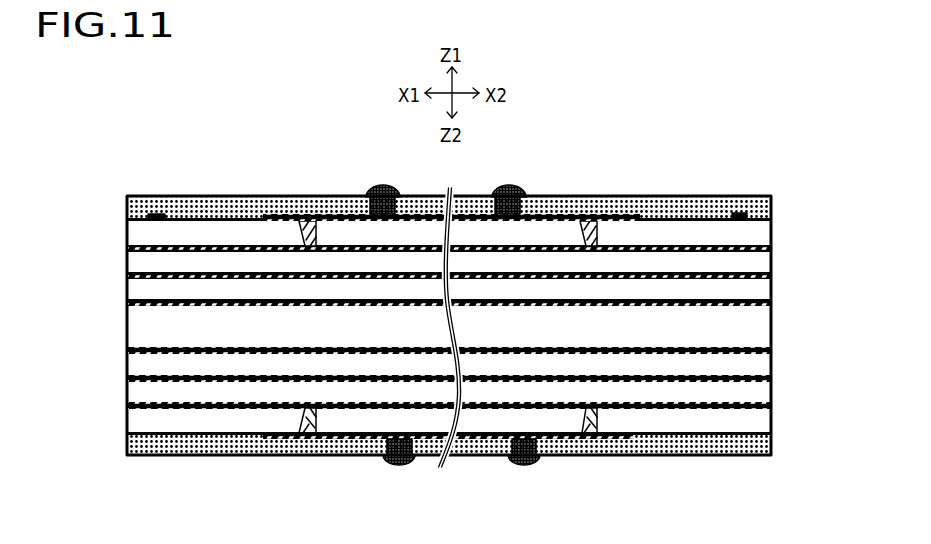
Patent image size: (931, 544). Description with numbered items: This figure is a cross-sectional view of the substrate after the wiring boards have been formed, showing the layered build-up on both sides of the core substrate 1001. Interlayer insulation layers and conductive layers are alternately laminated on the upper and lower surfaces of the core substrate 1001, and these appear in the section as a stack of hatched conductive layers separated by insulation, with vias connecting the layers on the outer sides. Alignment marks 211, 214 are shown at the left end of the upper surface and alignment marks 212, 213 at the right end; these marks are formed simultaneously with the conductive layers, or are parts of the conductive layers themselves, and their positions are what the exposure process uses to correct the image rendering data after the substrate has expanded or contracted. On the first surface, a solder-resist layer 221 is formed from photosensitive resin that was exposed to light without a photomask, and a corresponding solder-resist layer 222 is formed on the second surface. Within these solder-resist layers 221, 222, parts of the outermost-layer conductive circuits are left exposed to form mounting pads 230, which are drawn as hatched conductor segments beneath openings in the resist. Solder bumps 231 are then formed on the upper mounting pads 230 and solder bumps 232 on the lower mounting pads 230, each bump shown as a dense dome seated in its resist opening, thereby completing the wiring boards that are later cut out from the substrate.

The core substrate 1001 is at (127, 327).
The solder-resist layer 221 is at (126, 205).
The solder-resist layer 222 is at (127, 440).
The mounting pad 230 is at (354, 203).
The solder bump 231 is at (383, 186).
The solder bump 232 is at (398, 466).
The alignment mark 211 is at (173, 191).
The alignment mark 214 is at (152, 216).
The alignment mark 212 is at (753, 188).
The alignment mark 213 is at (760, 182).